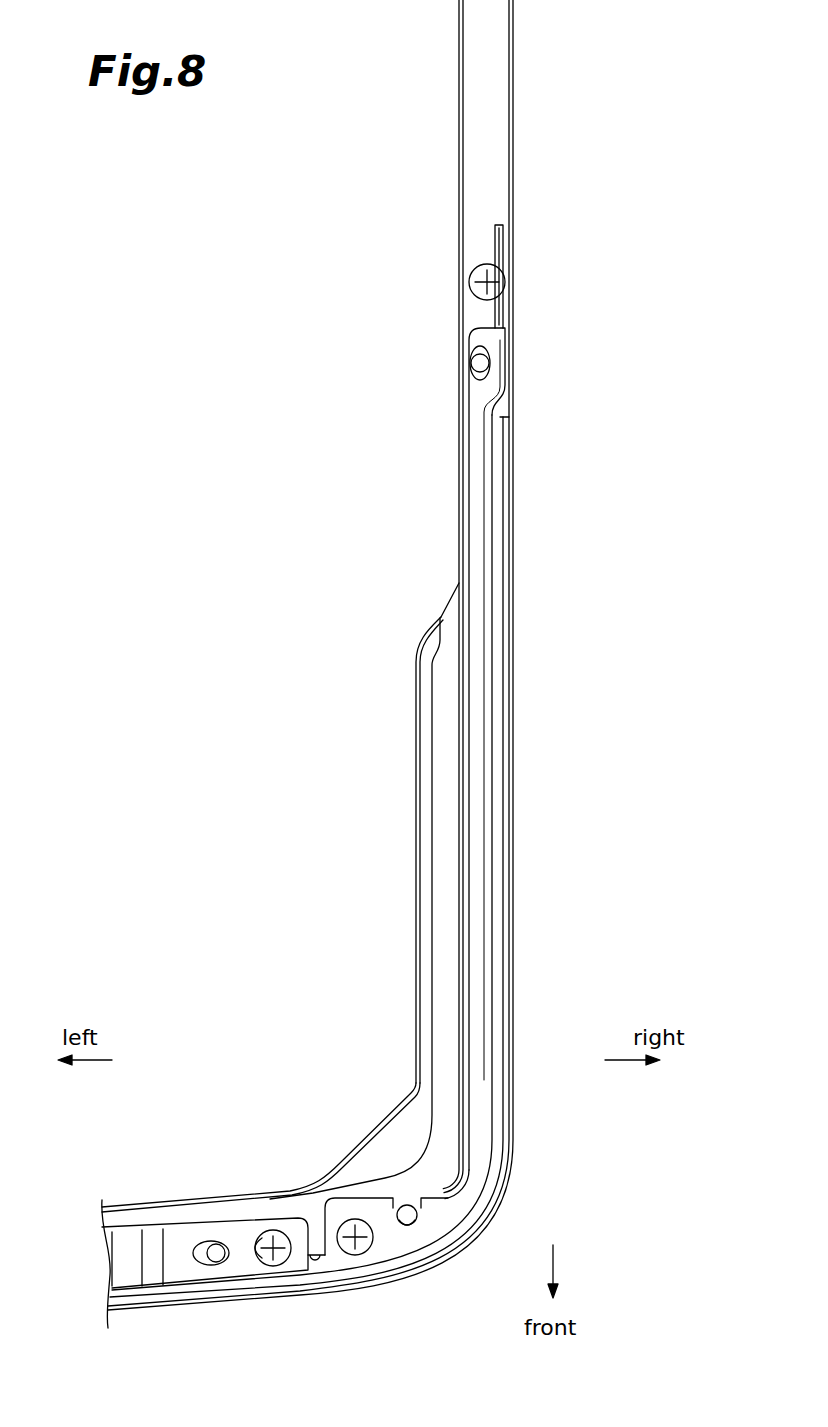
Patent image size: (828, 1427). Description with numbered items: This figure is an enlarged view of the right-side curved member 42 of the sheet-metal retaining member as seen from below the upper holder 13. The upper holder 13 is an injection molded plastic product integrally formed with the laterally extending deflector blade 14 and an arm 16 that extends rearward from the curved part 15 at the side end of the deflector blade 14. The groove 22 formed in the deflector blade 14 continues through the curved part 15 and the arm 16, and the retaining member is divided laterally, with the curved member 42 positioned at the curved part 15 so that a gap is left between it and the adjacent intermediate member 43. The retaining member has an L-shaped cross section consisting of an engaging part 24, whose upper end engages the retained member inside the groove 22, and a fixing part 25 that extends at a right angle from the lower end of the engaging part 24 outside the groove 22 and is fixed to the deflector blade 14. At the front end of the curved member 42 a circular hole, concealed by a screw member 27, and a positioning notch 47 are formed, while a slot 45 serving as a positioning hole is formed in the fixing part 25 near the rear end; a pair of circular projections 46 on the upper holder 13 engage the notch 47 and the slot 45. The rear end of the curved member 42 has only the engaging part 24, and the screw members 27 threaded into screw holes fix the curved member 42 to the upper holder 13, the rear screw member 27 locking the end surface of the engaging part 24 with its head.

The upper holder 13 is at (163, 1203).
The deflector blade 14 is at (276, 1215).
The curved part 15 is at (412, 1112).
The arm 16 is at (447, 682).
The groove 22 is at (321, 1203).
The engaging part 24 is at (500, 242).
The fixing part 25 is at (468, 392).
The screw member 27 is at (469, 284).
The curved member 42 is at (440, 1215).
The intermediate member 43 is at (132, 1275).
The slot 45 is at (470, 362).
The circular projection 46 is at (483, 368).
The notch 47 is at (408, 1225).